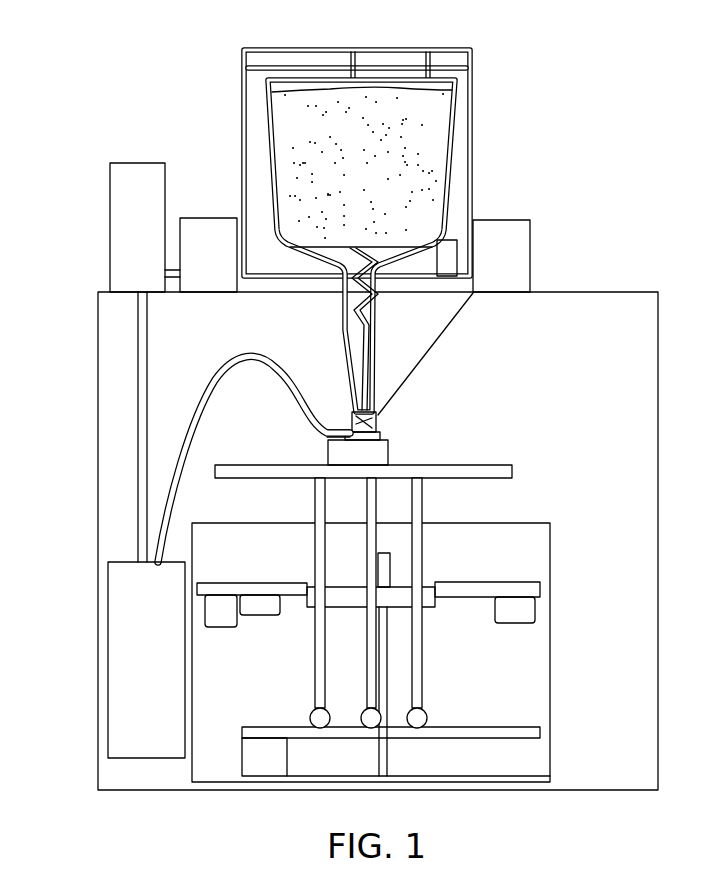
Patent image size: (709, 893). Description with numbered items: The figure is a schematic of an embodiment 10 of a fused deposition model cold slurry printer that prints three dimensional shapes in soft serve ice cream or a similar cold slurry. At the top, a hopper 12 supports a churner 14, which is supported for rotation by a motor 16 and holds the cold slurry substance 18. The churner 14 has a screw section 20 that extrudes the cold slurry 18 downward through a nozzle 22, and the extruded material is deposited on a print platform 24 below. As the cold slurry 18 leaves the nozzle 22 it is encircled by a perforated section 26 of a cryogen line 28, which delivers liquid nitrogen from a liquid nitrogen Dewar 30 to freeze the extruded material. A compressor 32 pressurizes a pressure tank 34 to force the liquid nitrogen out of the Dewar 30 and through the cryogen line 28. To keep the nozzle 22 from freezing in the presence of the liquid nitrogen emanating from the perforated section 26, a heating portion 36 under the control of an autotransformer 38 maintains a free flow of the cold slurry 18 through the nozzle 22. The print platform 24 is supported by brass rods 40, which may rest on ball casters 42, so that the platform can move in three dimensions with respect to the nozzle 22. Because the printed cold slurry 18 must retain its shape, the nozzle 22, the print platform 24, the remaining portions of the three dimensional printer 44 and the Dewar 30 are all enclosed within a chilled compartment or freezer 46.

The fused deposition model cold slurry printer 10 is at (528, 101).
The hopper 12 is at (242, 79).
The churner 14 is at (428, 66).
The motor 16 is at (470, 232).
The cold slurry substance 18 is at (361, 246).
The screw section 20 is at (378, 311).
The nozzle 22 is at (378, 396).
The print platform 24 is at (452, 465).
The perforated section 26 is at (352, 420).
The cryogen line 28 is at (222, 362).
The liquid nitrogen Dewar 30 is at (120, 560).
The compressor 32 is at (205, 218).
The pressure tank 34 is at (130, 163).
The heating portion 36 is at (380, 420).
The autotransformer 38 is at (530, 243).
The brass rods 40 is at (424, 668).
The ball casters 42 is at (311, 711).
The 3D printer 44 is at (537, 692).
The chilled compartment or freezer 46 is at (378, 541).